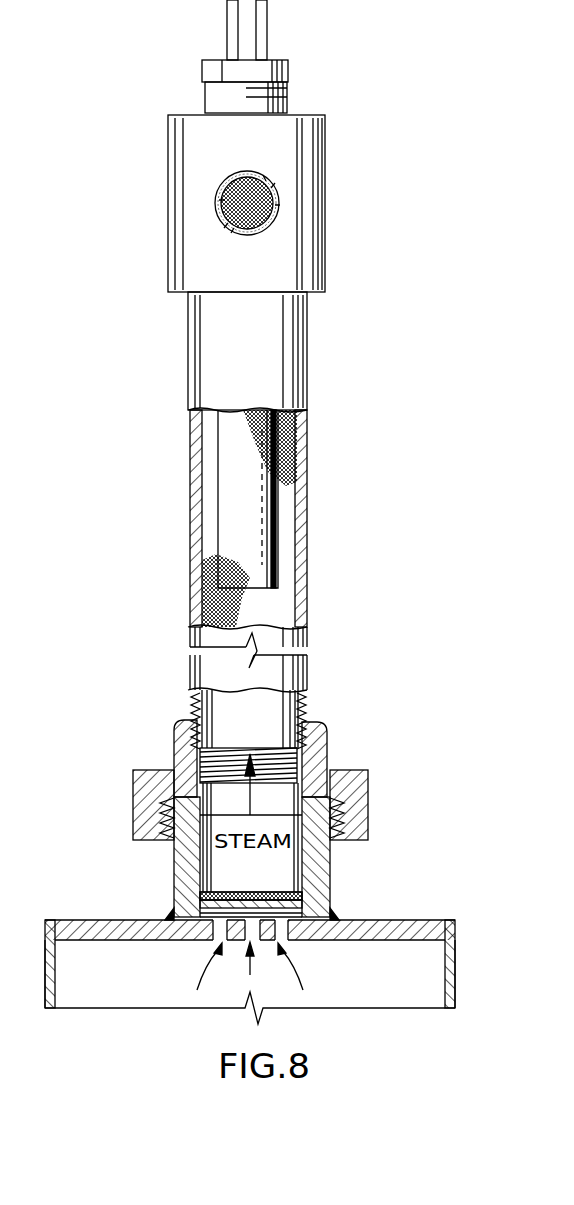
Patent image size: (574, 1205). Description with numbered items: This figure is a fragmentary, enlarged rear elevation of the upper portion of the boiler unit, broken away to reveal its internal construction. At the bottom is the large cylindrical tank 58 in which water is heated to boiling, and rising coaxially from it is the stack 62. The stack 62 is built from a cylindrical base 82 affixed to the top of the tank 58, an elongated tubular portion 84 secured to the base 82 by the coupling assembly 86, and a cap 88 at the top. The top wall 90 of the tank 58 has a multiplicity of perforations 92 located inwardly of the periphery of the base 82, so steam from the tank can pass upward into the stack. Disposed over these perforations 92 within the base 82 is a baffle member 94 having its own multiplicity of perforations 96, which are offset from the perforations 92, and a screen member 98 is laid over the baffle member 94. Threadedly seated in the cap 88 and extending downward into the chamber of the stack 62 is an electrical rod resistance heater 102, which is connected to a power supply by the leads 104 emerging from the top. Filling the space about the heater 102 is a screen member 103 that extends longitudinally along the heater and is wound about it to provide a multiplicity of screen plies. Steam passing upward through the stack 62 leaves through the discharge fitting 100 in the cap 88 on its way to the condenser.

The tank 58 is at (455, 963).
The stack 62 is at (190, 367).
The cylindrical base 82 is at (174, 871).
The elongated tubular portion 84 is at (307, 468).
The coupling assembly 86 is at (368, 795).
The cap 88 is at (313, 220).
The top wall 90 is at (246, 923).
The perforations 92 is at (222, 932).
The baffle member 94 is at (290, 906).
The perforations 96 is at (258, 891).
The screen member 98 is at (292, 886).
The discharge fitting 100 is at (215, 208).
The electrical rod resistance heater 102 is at (263, 525).
The screen member 103 is at (262, 188).
The leads 104 is at (234, 24).